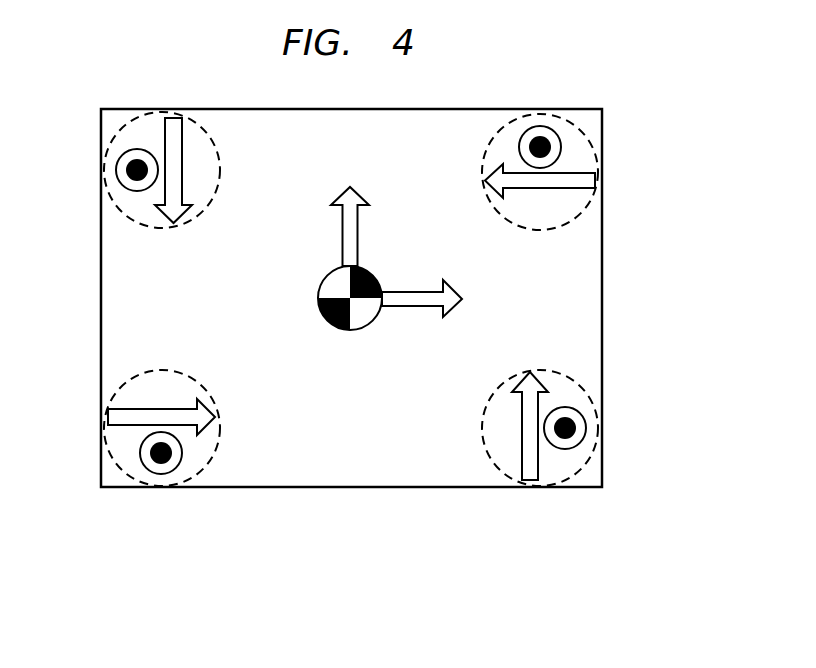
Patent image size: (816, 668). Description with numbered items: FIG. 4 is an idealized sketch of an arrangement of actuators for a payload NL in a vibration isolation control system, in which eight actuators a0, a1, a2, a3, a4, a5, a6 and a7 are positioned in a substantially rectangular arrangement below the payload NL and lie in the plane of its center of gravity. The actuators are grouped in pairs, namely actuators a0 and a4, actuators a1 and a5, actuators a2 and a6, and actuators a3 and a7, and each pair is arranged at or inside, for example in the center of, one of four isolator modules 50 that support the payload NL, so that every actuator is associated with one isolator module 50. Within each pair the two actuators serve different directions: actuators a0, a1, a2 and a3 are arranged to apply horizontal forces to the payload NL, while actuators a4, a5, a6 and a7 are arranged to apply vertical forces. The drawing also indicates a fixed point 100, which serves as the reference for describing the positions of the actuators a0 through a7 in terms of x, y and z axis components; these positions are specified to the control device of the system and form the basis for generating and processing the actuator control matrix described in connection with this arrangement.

The payload NL is at (608, 302).
The isolator module 50 is at (218, 155).
The fixed point 100 is at (325, 320).
The actuator a0 is at (538, 467).
The actuator a1 is at (120, 426).
The actuator a2 is at (165, 128).
The actuator a3 is at (580, 172).
The actuator a4 is at (587, 428).
The actuator a5 is at (158, 474).
The actuator a6 is at (114, 170).
The actuator a7 is at (540, 124).